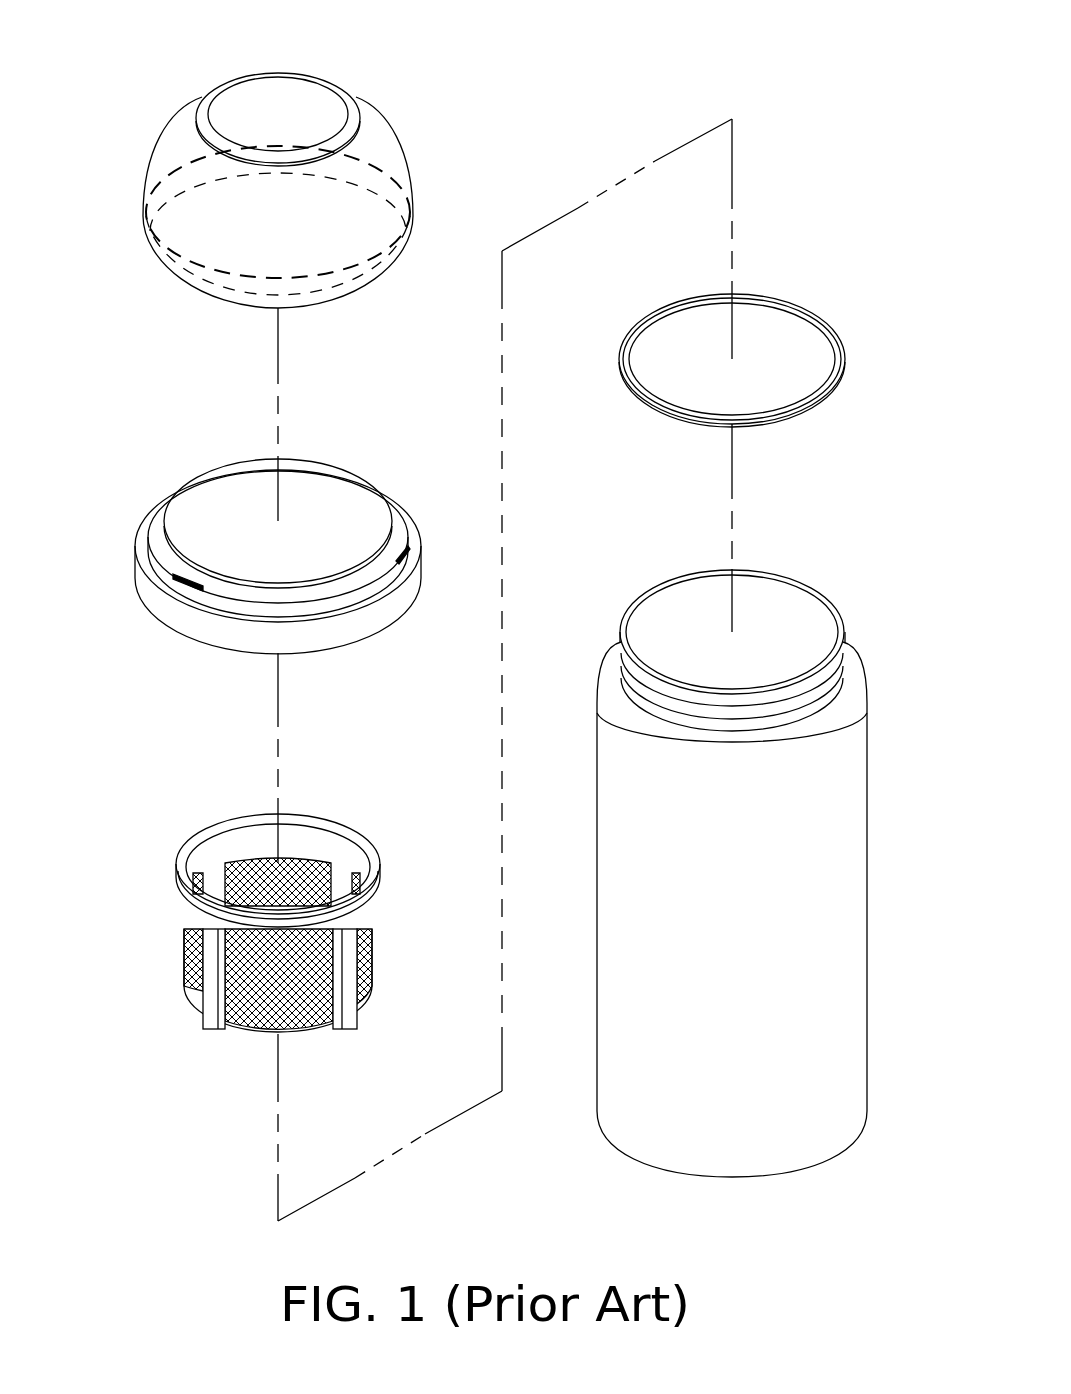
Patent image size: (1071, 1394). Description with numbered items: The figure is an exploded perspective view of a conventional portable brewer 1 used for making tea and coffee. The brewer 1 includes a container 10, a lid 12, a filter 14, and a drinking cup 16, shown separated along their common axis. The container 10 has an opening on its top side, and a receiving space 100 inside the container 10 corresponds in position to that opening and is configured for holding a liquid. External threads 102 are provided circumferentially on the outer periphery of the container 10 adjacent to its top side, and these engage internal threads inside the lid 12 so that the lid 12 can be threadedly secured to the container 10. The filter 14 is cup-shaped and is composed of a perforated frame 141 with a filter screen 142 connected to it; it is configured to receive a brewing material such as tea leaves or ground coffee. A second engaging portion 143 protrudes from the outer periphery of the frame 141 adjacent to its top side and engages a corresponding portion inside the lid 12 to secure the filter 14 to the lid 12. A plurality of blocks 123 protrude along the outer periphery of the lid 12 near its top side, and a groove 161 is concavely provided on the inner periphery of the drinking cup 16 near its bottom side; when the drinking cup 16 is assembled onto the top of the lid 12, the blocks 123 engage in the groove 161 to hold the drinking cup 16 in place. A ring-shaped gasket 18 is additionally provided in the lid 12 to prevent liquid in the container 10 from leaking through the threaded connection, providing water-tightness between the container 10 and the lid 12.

The brewer 1 is at (807, 64).
The container 10 is at (708, 863).
The receiving space 100 is at (783, 622).
The external threads 102 is at (632, 665).
The lid 12 is at (298, 559).
The blocks 123 is at (398, 555).
The filter 14 is at (252, 901).
The frame 141 is at (210, 999).
The filter screen 142 is at (187, 953).
The second engaging portion 143 is at (380, 866).
The drinking cup 16 is at (306, 217).
The groove 161 is at (378, 262).
The gasket 18 is at (778, 304).